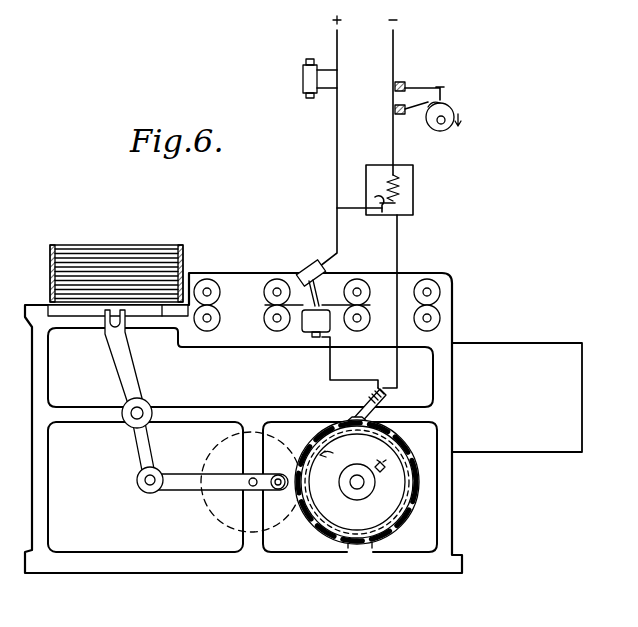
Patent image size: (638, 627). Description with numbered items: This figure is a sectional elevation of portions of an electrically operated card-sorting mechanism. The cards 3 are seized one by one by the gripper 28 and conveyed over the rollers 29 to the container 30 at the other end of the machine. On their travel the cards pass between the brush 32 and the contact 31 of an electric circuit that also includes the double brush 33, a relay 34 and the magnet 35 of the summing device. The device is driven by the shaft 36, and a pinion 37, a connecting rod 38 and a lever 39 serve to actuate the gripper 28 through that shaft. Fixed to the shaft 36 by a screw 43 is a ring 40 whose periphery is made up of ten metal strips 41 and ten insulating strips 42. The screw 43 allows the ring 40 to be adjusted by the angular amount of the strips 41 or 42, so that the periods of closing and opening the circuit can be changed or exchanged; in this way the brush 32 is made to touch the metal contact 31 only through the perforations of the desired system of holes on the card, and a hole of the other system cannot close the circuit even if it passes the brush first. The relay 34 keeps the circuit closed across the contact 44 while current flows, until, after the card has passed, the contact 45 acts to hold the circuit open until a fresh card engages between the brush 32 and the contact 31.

The cards 3 is at (108, 258).
The gripper 28 is at (89, 312).
The rollers 29 is at (267, 315).
The container 30 is at (517, 397).
The contact 31 is at (308, 328).
The brush 32 is at (304, 270).
The double brush 33 is at (362, 400).
The relay 34 is at (403, 190).
The magnet 35 is at (306, 78).
The shaft 36 is at (351, 484).
The pinion 37 is at (222, 518).
The connecting rod 38 is at (188, 488).
The lever 39 is at (130, 372).
The ring 40 is at (396, 522).
The metal strips 41 is at (391, 532).
The insulating strips 42 is at (308, 516).
The screw 43 is at (380, 459).
The contact 44 is at (379, 213).
The contact 45 is at (453, 110).